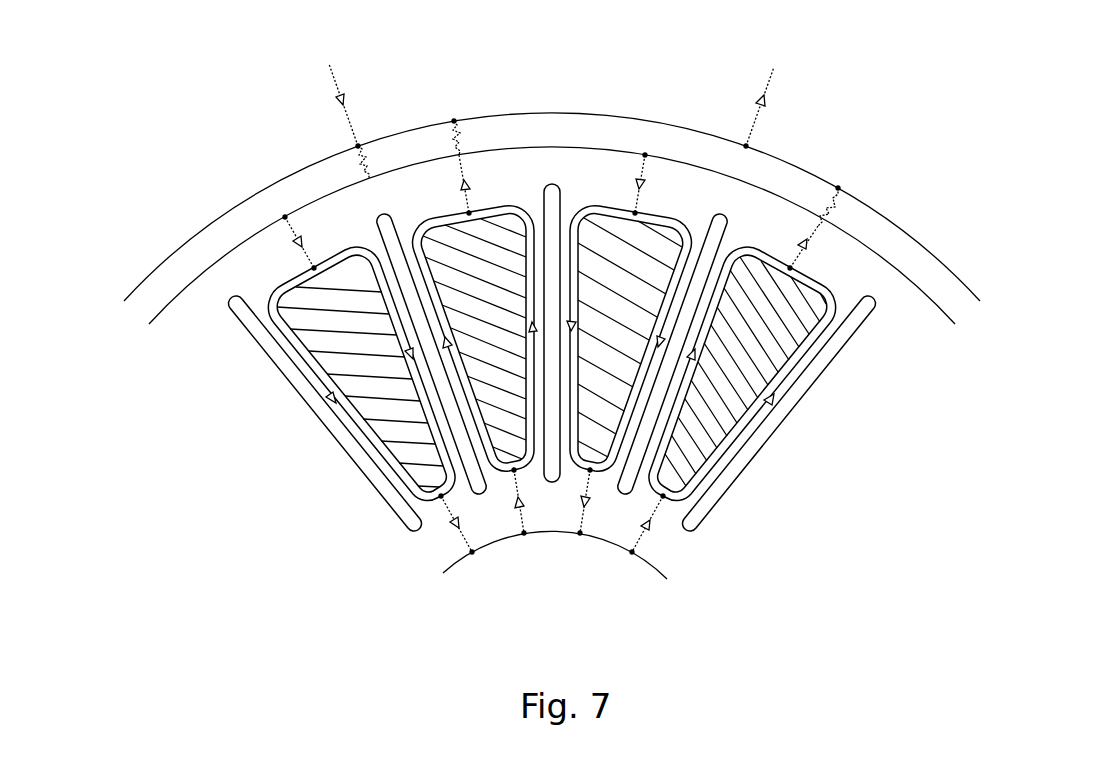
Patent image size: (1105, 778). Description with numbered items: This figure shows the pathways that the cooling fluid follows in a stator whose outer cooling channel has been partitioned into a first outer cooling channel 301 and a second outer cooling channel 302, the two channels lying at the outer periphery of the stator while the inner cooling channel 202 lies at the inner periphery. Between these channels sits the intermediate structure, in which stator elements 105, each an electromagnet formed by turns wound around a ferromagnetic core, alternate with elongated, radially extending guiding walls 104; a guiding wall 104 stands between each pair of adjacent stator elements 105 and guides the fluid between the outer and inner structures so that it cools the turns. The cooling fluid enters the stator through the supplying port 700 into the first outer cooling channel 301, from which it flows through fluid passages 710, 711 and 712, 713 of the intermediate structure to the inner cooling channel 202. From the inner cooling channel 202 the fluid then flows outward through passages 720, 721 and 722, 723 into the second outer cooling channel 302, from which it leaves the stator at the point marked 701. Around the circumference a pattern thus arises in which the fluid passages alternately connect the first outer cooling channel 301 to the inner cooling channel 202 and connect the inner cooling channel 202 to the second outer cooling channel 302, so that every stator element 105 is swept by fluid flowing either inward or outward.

The supplying port 700 is at (366, 90).
The magnetic flux exiting stator yoke 701 is at (775, 125).
The fluid passage 710 is at (302, 228).
The fluid passage 721 is at (475, 183).
The fluid passage 712 is at (653, 183).
The fluid passage 723 is at (823, 252).
The fluid passage 711 is at (448, 535).
The fluid passage 720 is at (513, 514).
The fluid passage 713 is at (570, 508).
The fluid passage 722 is at (627, 530).
The second outer cooling channel 302 is at (985, 291).
The first outer cooling channel 301 is at (973, 327).
The guiding wall 104 is at (812, 390).
The stator element 105 is at (703, 443).
The inner cooling channel 202 is at (688, 581).